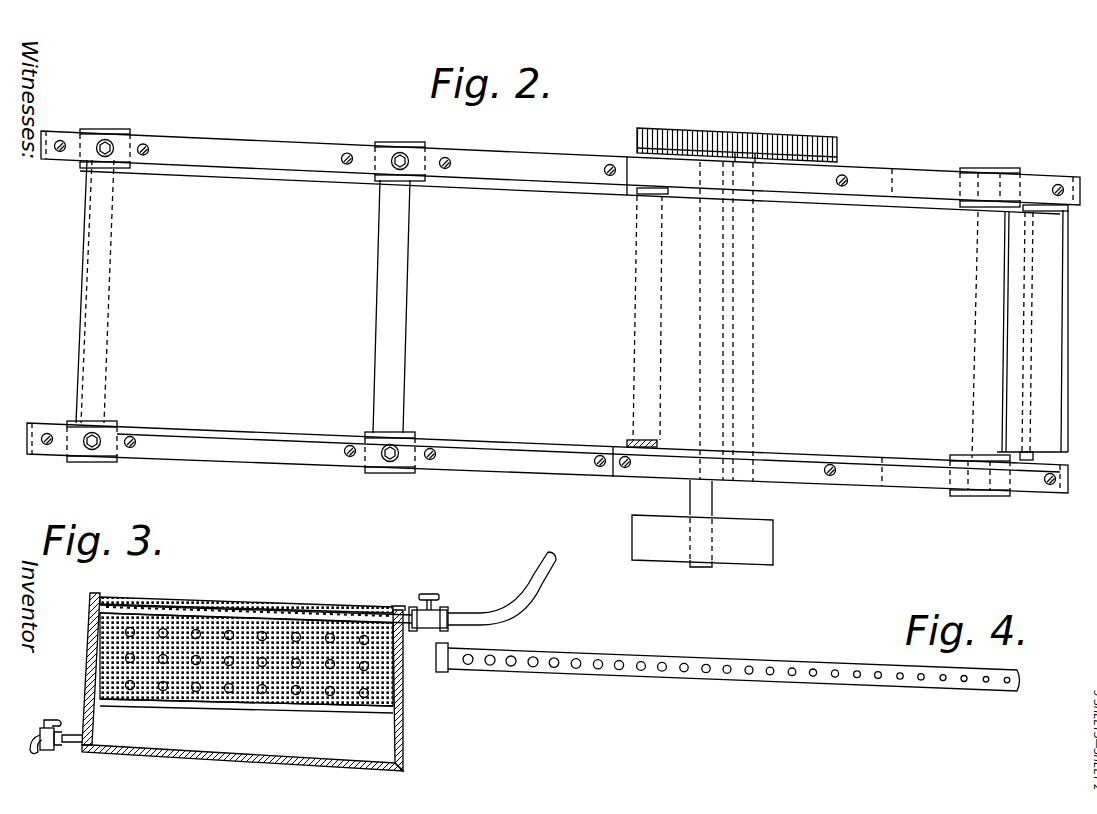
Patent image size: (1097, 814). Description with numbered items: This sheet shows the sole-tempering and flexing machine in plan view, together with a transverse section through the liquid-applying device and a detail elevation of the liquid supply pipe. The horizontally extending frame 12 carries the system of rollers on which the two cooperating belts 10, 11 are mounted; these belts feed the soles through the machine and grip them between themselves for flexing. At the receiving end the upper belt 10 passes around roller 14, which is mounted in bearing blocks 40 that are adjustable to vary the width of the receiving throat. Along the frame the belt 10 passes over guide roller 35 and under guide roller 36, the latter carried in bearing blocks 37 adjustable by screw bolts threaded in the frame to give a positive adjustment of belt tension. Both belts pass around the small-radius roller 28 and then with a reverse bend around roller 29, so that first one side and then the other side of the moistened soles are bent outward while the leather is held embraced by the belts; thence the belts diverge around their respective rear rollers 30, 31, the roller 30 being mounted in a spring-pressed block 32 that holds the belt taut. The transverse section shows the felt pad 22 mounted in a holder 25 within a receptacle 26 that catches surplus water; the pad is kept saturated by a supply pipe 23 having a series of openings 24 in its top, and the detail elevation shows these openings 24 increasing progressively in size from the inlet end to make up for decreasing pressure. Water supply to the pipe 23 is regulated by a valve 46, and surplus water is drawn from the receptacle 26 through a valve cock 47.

In FIG. 2, the belt 10 is at (222, 165).
In FIG. 2, the belt 11 is at (1045, 190).
In FIG. 2, the frame 12 is at (858, 172).
In FIG. 2, the roller 14 is at (95, 315).
In FIG. 3, the felt pad 22 is at (130, 633).
In FIG. 3, the supply pipe 23 is at (360, 618).
In FIG. 4, the supply pipe 23 is at (916, 692).
In FIG. 3, the openings 24 is at (147, 600).
In FIG. 4, the openings 24 is at (530, 666).
In FIG. 3, the holder 25 is at (186, 708).
In FIG. 3, the receptacle 26 is at (383, 770).
In FIG. 2, the roller 28 is at (745, 220).
In FIG. 2, the roller 29 is at (712, 354).
In FIG. 2, the roller 30 is at (985, 226).
In FIG. 2, the roller 31 is at (1010, 298).
In FIG. 2, the block 32 is at (978, 170).
In FIG. 2, the guide roller 35 is at (640, 205).
In FIG. 2, the guide roller 36 is at (398, 262).
In FIG. 2, the bearing blocks 37 is at (412, 142).
In FIG. 2, the bearing blocks 40 is at (112, 130).
In FIG. 3, the valve 46 is at (432, 612).
In FIG. 3, the valve cock 47 is at (58, 752).